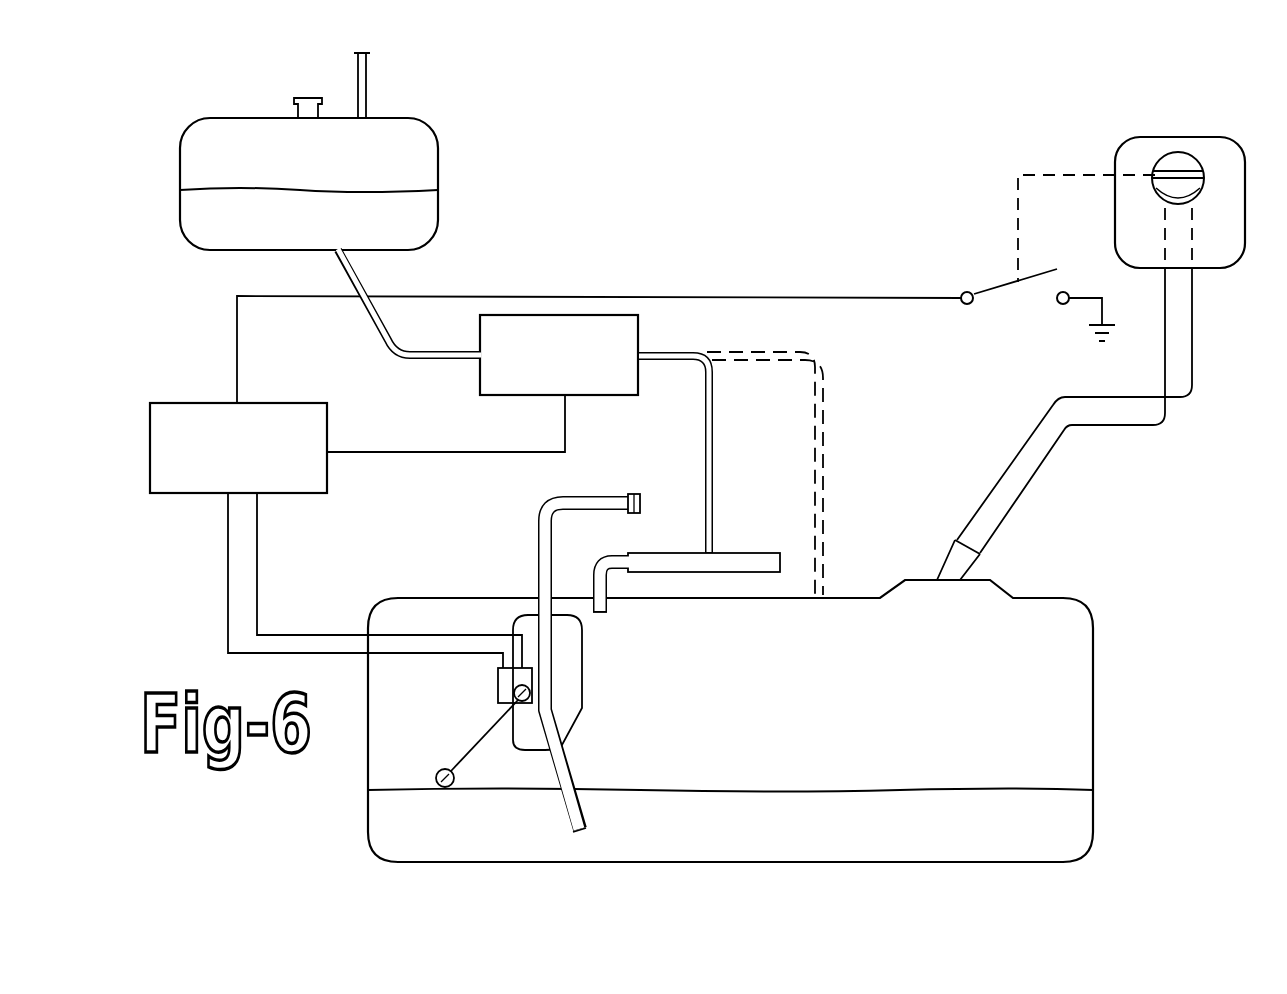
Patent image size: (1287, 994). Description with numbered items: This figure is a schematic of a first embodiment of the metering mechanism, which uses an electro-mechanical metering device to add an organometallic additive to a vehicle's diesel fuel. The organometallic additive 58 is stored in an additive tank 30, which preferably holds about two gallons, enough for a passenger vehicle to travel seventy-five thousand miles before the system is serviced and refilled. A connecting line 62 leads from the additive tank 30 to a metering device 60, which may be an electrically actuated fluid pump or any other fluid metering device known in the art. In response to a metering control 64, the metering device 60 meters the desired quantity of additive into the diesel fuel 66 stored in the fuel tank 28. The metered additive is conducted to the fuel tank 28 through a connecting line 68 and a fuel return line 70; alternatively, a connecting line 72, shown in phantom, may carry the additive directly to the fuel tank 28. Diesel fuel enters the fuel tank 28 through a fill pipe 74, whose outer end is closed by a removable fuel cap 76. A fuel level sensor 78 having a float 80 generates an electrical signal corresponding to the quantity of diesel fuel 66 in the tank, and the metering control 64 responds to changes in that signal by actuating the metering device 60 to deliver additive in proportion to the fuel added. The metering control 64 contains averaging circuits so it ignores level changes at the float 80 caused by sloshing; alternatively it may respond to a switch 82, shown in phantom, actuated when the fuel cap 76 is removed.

The fuel tank 28 is at (1094, 696).
The additive tank 30 is at (438, 158).
The organometallic additive 58 is at (279, 230).
The metering device 60 is at (533, 395).
The connecting line 62 is at (360, 313).
The metering control 64 is at (187, 493).
The diesel fuel 66 is at (799, 835).
The connecting line 68 is at (713, 488).
The fuel return line 70 is at (678, 553).
The connecting line 72 is at (824, 378).
The fill pipe 74 is at (1112, 428).
The fuel cap 76 is at (1163, 162).
The fuel level sensor 78 is at (498, 680).
The float 80 is at (436, 774).
The switch 82 is at (1024, 317).